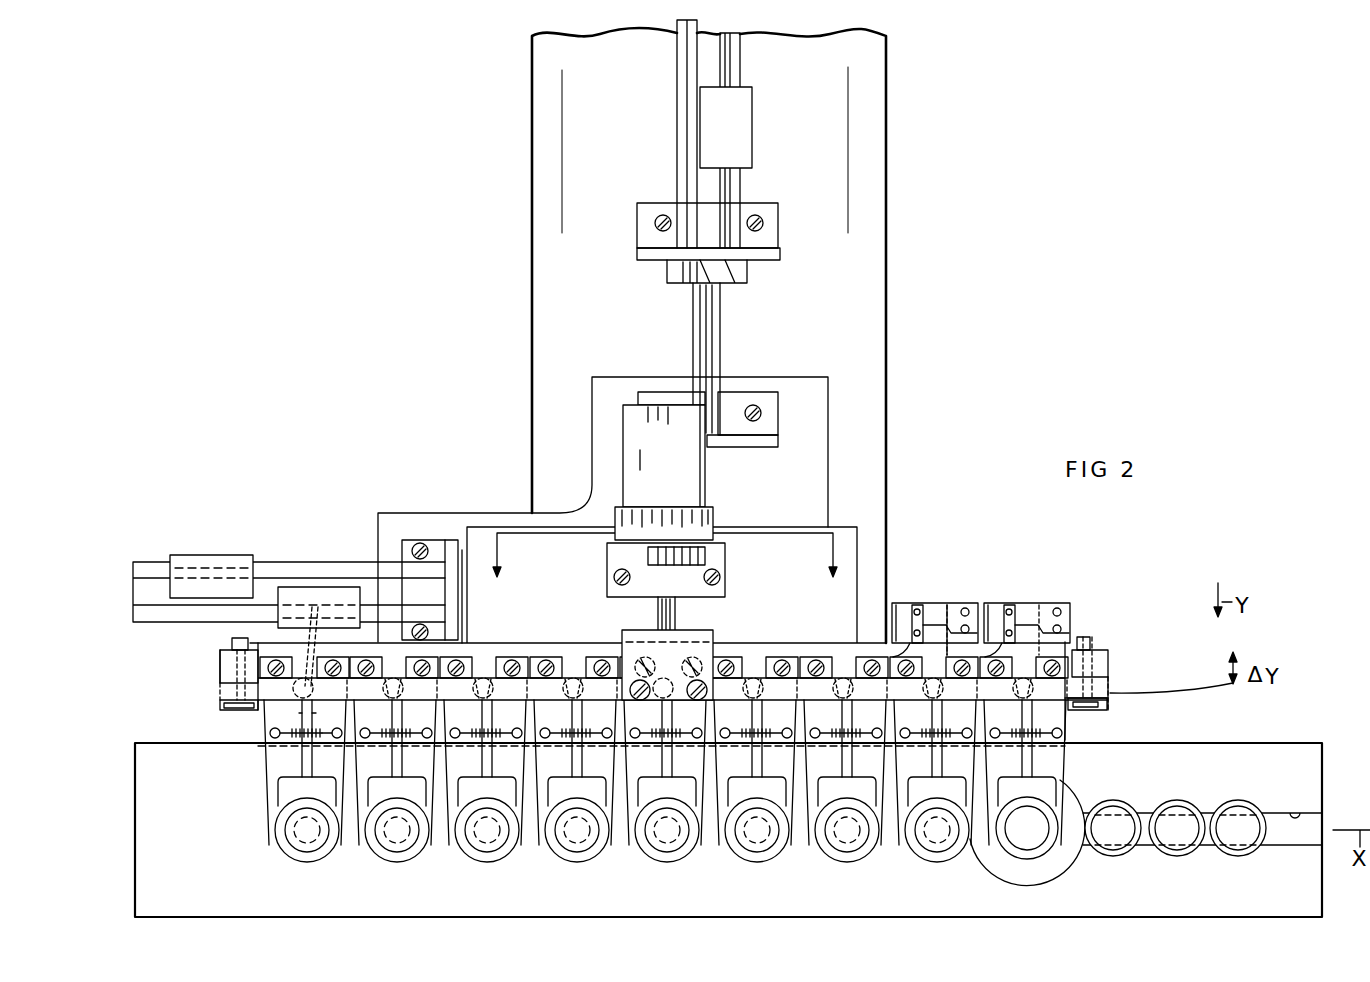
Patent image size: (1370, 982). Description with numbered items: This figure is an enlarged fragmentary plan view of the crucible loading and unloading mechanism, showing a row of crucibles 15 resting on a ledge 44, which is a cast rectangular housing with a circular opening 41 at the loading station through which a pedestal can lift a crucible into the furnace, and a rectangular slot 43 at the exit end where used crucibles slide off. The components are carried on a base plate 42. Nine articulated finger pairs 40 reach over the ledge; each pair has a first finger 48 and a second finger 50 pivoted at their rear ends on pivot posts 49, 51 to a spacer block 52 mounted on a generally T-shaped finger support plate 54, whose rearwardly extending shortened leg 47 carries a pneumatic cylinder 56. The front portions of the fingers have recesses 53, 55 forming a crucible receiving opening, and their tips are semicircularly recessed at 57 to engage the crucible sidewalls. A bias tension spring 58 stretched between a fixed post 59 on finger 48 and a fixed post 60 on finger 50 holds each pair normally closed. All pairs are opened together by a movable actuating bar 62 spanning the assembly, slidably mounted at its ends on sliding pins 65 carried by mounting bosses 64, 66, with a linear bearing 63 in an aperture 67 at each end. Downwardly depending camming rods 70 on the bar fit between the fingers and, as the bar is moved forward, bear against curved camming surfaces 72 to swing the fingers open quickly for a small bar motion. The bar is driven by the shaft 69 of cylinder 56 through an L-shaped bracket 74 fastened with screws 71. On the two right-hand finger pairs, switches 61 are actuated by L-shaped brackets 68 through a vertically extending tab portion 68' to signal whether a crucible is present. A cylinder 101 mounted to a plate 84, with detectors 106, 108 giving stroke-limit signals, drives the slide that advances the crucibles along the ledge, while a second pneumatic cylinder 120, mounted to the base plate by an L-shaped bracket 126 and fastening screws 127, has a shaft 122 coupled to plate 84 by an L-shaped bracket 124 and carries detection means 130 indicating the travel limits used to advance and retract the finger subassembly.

The crucibles 15 is at (1217, 850).
The articulated finger pairs 40 is at (256, 800).
The circular opening 41 is at (1065, 863).
The base plate 42 is at (888, 188).
The rectangular slot 43 is at (1303, 813).
The ledge 44 is at (162, 842).
The shortened leg 47 is at (477, 528).
The first finger 48 is at (268, 773).
The pivot post 49 is at (283, 658).
The second finger 50 is at (312, 762).
The pivot post 51 is at (334, 661).
The spacer block 52 is at (222, 642).
The recess 53 is at (280, 817).
The finger support plate 54 is at (848, 553).
The recess 55 is at (330, 788).
The pneumatic cylinder 56 is at (698, 515).
The semicircular recess 57 is at (327, 839).
The bias tension spring 58 is at (292, 740).
The fixed post 59 is at (268, 732).
The fixed post 60 is at (327, 714).
The switches 61 is at (1011, 606).
The actuating bar 62 is at (736, 686).
The linear bearing 63 is at (1108, 708).
The mounting boss 64 is at (228, 660).
The sliding pins 65 is at (1085, 640).
The mounting boss 66 is at (1110, 660).
The aperture 67 is at (1110, 682).
The L-shaped brackets 68 is at (981, 609).
The tab portion 68' is at (951, 590).
The shaft 69 is at (668, 613).
The camming rods 70 is at (285, 714).
The screws 71 is at (690, 685).
The curved camming surfaces 72 is at (320, 642).
The L-shaped bracket 74 is at (642, 631).
The plate 84 is at (407, 520).
The cylinder 101 is at (290, 560).
The detector 106 is at (199, 555).
The detector 108 is at (331, 588).
The pneumatic cylinder 120 is at (742, 183).
The shaft 122 is at (710, 332).
The L-shaped bracket 124 is at (780, 417).
The L-shaped bracket 126 is at (778, 235).
The fastening screws 127 is at (802, 205).
The detection means 130 is at (747, 115).